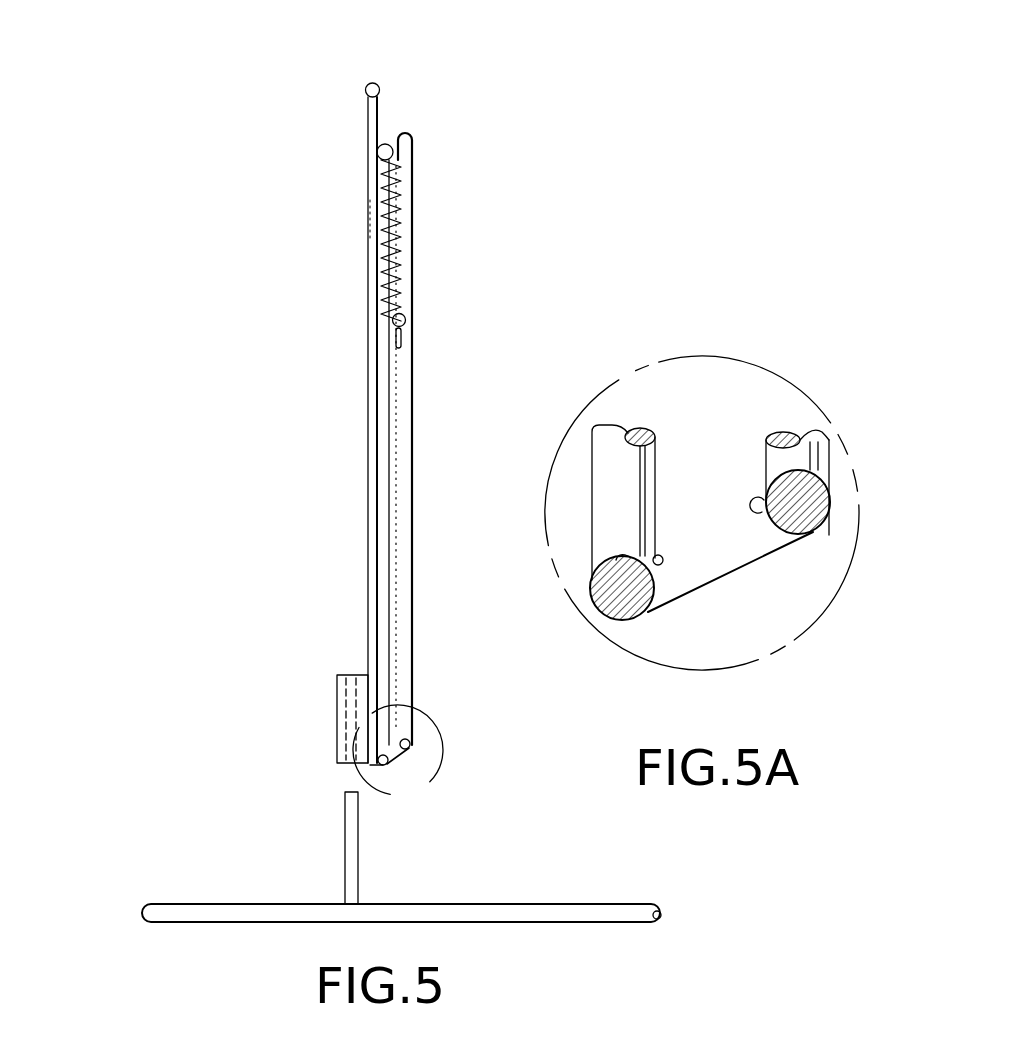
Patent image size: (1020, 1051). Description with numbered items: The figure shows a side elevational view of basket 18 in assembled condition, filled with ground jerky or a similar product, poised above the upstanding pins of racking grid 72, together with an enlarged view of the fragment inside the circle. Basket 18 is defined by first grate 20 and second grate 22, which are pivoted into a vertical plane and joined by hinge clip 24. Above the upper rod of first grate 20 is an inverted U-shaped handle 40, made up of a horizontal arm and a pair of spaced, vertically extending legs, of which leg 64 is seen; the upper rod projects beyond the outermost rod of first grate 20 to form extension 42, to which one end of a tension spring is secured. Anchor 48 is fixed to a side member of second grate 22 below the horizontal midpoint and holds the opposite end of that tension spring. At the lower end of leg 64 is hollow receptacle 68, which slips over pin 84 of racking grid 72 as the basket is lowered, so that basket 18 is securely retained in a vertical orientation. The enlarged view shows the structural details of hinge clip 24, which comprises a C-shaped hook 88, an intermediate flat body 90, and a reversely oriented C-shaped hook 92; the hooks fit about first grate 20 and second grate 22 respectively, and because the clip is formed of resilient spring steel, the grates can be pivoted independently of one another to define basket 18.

In FIG. 5, the basket 18 is at (292, 403).
In FIG. 5, the first grate 20 is at (385, 297).
In FIG. 5A, the first grate 20 is at (600, 615).
In FIG. 5, the second grate 22 is at (405, 318).
In FIG. 5A, the second grate 22 is at (832, 488).
In FIG. 5, the hinge clip 24 is at (418, 775).
In FIG. 5A, the hinge clip 24 is at (710, 606).
In FIG. 5, the handle 40 is at (372, 82).
In FIG. 5, the extension 42 is at (399, 130).
In FIG. 5, the anchor 48 is at (408, 338).
In FIG. 5, the leg 64 is at (375, 222).
In FIG. 5, the hollow receptacle 68 is at (337, 688).
In FIG. 5, the racking grid 72 is at (124, 909).
In FIG. 5, the pin 84 is at (358, 862).
In FIG. 5A, the C-shaped hook 88 is at (625, 550).
In FIG. 5A, the intermediate flat body 90 is at (740, 572).
In FIG. 5A, the reversely oriented C-shaped hook 92 is at (797, 463).